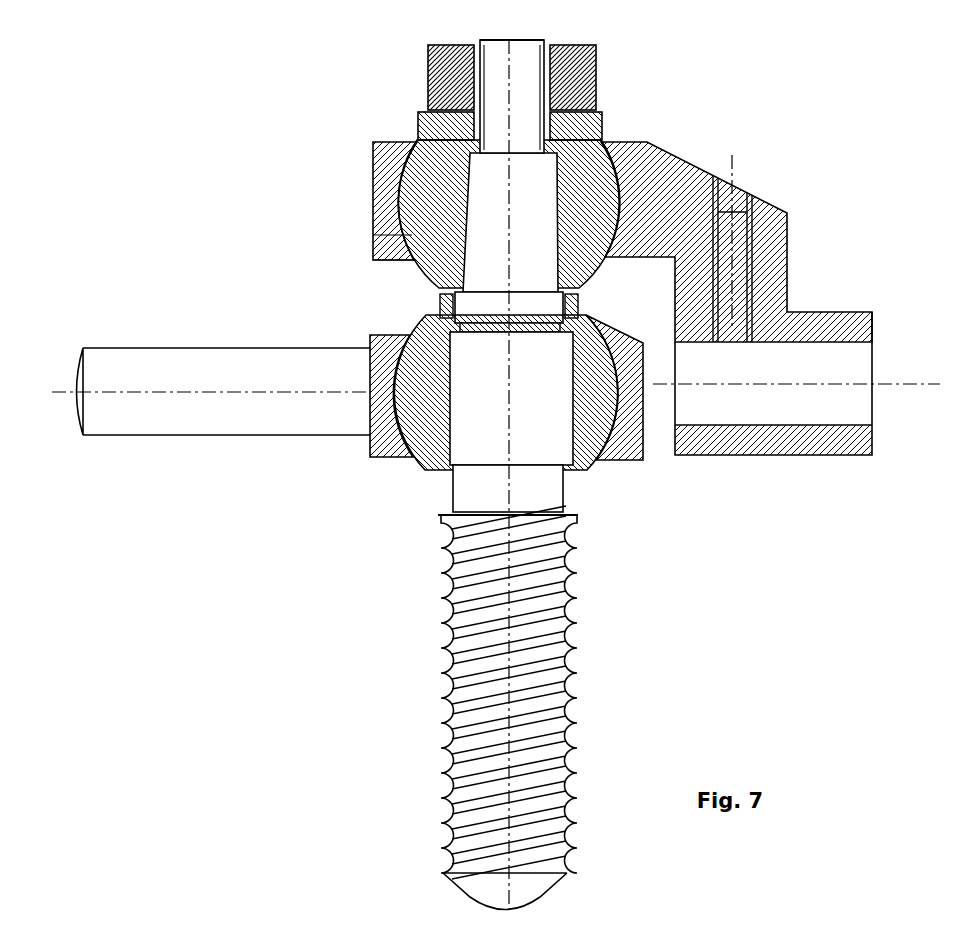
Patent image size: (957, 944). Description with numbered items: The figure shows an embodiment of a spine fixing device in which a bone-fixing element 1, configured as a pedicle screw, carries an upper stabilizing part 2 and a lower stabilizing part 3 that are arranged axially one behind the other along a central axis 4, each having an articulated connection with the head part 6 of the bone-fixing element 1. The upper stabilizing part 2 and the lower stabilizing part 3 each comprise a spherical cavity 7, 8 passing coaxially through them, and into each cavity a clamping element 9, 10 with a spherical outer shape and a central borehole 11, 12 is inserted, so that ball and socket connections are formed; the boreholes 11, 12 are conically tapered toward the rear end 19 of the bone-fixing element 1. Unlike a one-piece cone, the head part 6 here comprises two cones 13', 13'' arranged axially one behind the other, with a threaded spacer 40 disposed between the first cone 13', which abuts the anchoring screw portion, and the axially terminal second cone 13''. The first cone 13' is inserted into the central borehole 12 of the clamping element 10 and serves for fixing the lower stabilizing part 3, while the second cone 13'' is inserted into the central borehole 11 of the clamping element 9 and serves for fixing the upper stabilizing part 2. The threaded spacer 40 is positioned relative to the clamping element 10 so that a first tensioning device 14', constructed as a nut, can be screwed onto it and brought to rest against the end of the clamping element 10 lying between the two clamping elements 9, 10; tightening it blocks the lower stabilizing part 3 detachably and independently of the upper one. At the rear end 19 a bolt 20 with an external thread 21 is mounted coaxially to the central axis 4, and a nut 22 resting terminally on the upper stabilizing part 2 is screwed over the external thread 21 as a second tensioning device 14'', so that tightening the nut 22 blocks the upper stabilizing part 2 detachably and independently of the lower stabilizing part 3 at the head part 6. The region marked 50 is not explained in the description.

The bone-fixing element 1 is at (585, 683).
The upper stabilizing part 2 is at (692, 163).
The lower stabilizing part 3 is at (178, 415).
The central axis 4 is at (507, 713).
The head part 6 is at (395, 350).
The spherical cavity 7 is at (373, 142).
The spherical cavity 8 is at (493, 360).
The clamping element 9 is at (717, 188).
The clamping element 10 is at (593, 445).
The central borehole 11 is at (418, 128).
The central borehole 12 is at (447, 316).
The first cone 13' is at (447, 414).
The second cone 13'' is at (449, 214).
The first tensioning device 14' is at (427, 288).
The second tensioning device 14'' is at (642, 77).
The rear end 19 is at (548, 41).
The bolt 20 is at (495, 71).
The external thread 21 is at (598, 133).
The nut 22 is at (428, 96).
The threaded spacer 40 is at (403, 250).
The clamping body portion 50 is at (622, 445).